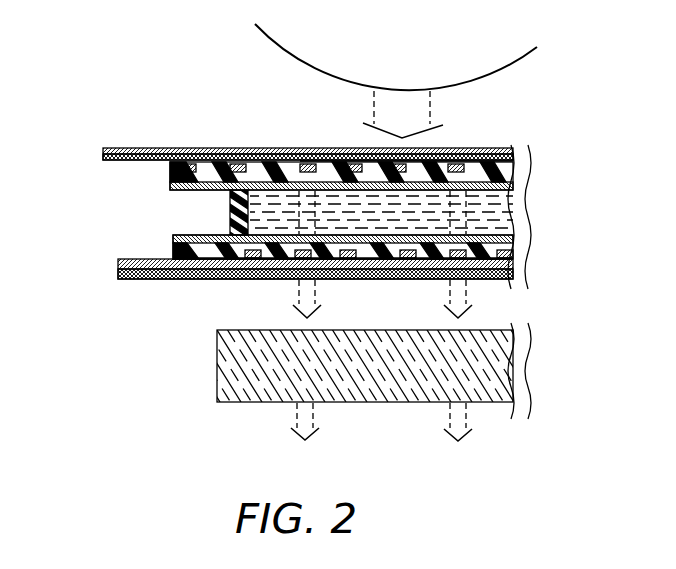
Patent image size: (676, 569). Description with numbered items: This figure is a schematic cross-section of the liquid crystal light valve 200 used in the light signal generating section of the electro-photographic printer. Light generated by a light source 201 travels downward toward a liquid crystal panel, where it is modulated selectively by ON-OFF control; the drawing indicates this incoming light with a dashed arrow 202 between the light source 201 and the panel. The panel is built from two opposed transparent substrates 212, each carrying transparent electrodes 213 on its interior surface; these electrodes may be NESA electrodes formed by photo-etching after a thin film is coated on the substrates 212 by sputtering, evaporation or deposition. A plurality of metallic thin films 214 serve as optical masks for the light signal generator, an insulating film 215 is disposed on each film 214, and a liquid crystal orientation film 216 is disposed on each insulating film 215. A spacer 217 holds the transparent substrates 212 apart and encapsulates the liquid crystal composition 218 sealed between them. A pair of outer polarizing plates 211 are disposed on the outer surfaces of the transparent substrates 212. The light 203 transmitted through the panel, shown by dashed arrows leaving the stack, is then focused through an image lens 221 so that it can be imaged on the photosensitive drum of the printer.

The light valve 200 is at (550, 211).
The light source 201 is at (496, 72).
The incident light 202 is at (432, 107).
The light 203 is at (470, 306).
The outer polarizing plates 211 is at (198, 148).
The transparent substrates 212 is at (103, 156).
The transparent electrodes 213 is at (304, 148).
The metallic thin films 214 is at (319, 161).
The insulating film 215 is at (170, 170).
The liquid crystal orientation film 216 is at (230, 220).
The spacer 217 is at (240, 272).
The liquid crystal composition 218 is at (376, 216).
The image lens 221 is at (226, 375).